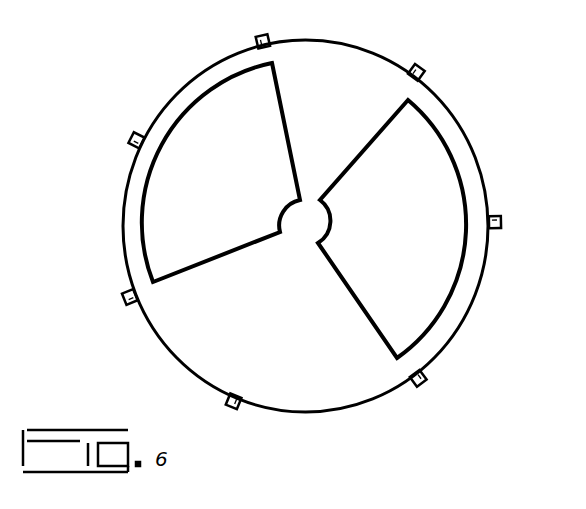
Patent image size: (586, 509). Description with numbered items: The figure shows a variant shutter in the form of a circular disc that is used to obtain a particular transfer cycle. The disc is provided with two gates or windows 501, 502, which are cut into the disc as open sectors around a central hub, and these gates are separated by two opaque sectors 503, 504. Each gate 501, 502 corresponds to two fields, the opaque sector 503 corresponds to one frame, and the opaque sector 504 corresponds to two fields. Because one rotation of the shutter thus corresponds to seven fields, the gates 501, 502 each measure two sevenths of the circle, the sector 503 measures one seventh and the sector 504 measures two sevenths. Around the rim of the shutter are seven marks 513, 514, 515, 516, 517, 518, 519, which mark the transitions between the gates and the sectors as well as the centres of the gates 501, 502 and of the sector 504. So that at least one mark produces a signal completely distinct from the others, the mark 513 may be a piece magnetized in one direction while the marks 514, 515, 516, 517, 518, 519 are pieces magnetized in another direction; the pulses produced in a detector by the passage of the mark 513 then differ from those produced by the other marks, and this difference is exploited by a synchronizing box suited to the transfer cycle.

The gate 501 is at (432, 250).
The gate 502 is at (172, 197).
The opaque sector 503 is at (327, 90).
The opaque sector 504 is at (328, 378).
The mark 513 is at (418, 388).
The mark 514 is at (498, 217).
The mark 515 is at (426, 66).
The mark 516 is at (257, 40).
The mark 517 is at (126, 137).
The mark 518 is at (121, 299).
The mark 519 is at (241, 410).